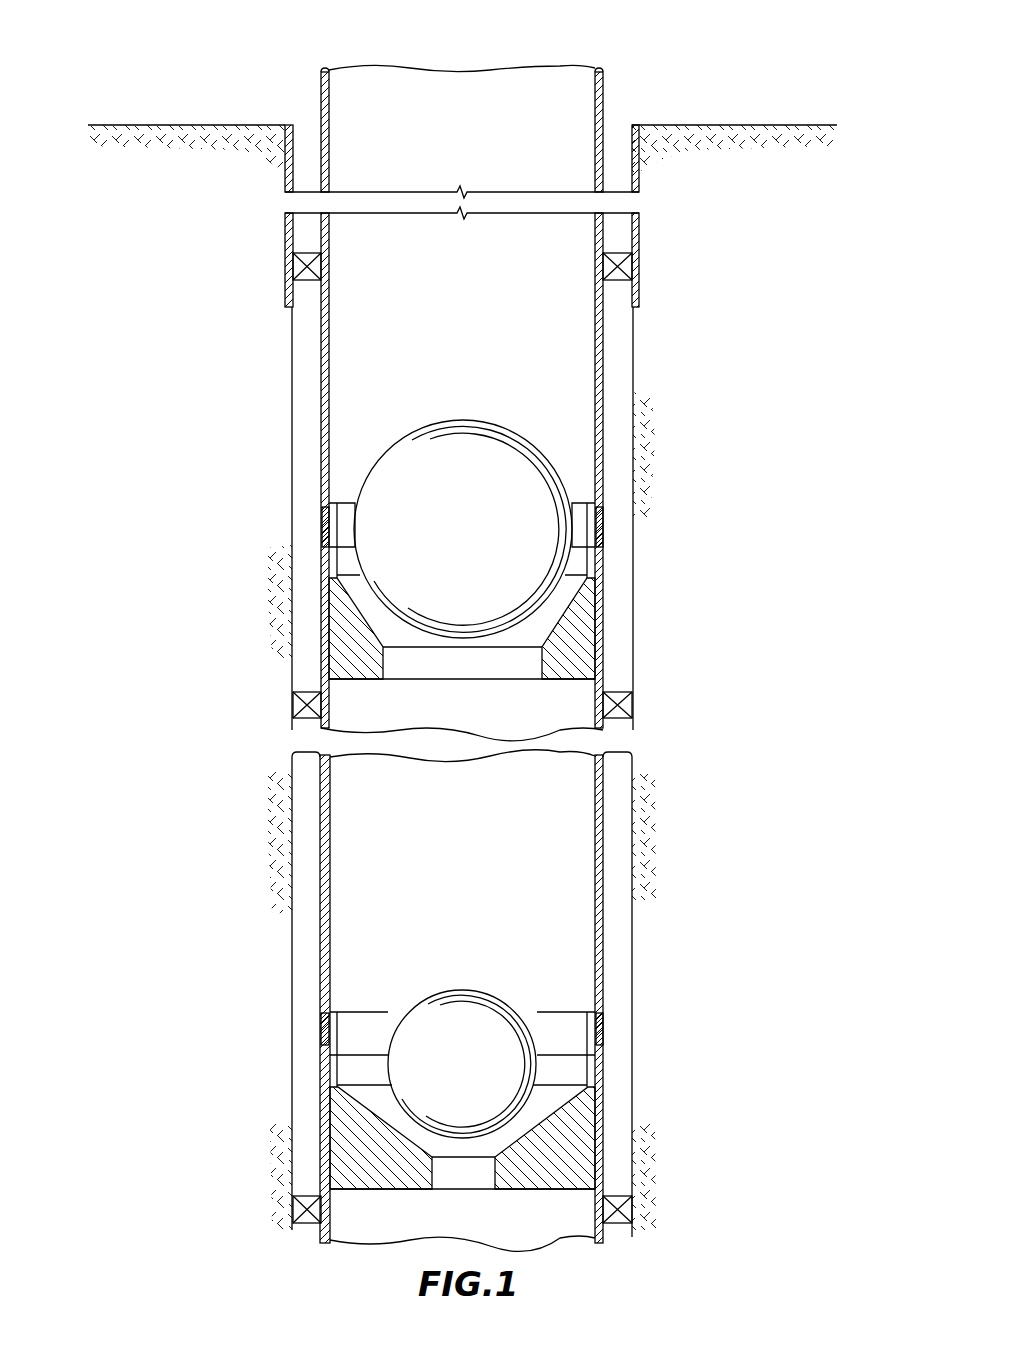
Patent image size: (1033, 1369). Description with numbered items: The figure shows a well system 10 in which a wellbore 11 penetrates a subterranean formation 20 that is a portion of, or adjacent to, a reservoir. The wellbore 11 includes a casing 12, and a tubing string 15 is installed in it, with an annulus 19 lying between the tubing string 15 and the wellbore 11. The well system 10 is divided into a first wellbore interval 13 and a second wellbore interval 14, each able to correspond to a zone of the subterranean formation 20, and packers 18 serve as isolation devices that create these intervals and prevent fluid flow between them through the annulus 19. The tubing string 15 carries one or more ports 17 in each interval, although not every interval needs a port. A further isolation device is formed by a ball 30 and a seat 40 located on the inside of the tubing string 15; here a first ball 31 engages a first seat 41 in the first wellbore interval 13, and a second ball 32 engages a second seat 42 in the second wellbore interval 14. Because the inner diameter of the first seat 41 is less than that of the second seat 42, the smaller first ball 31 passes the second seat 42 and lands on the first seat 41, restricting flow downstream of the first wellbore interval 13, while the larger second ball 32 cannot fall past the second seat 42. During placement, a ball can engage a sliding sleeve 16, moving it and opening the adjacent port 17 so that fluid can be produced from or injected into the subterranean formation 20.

The well system 10 is at (148, 78).
The wellbore 11 is at (633, 353).
The casing 12 is at (640, 232).
The first wellbore interval 13 is at (260, 916).
The second wellbore interval 14 is at (260, 488).
The tubing string 15 is at (322, 848).
The sliding sleeve 16 is at (605, 525).
The port 17 is at (322, 519).
The packer 18 is at (293, 258).
The annulus 19 is at (625, 968).
The subterranean formation 20 is at (782, 430).
The ball 30 is at (353, 779).
The first ball 31 is at (402, 1073).
The second ball 32 is at (383, 561).
The seat 40 is at (556, 846).
The first seat 41 is at (553, 1100).
The second seat 42 is at (607, 597).